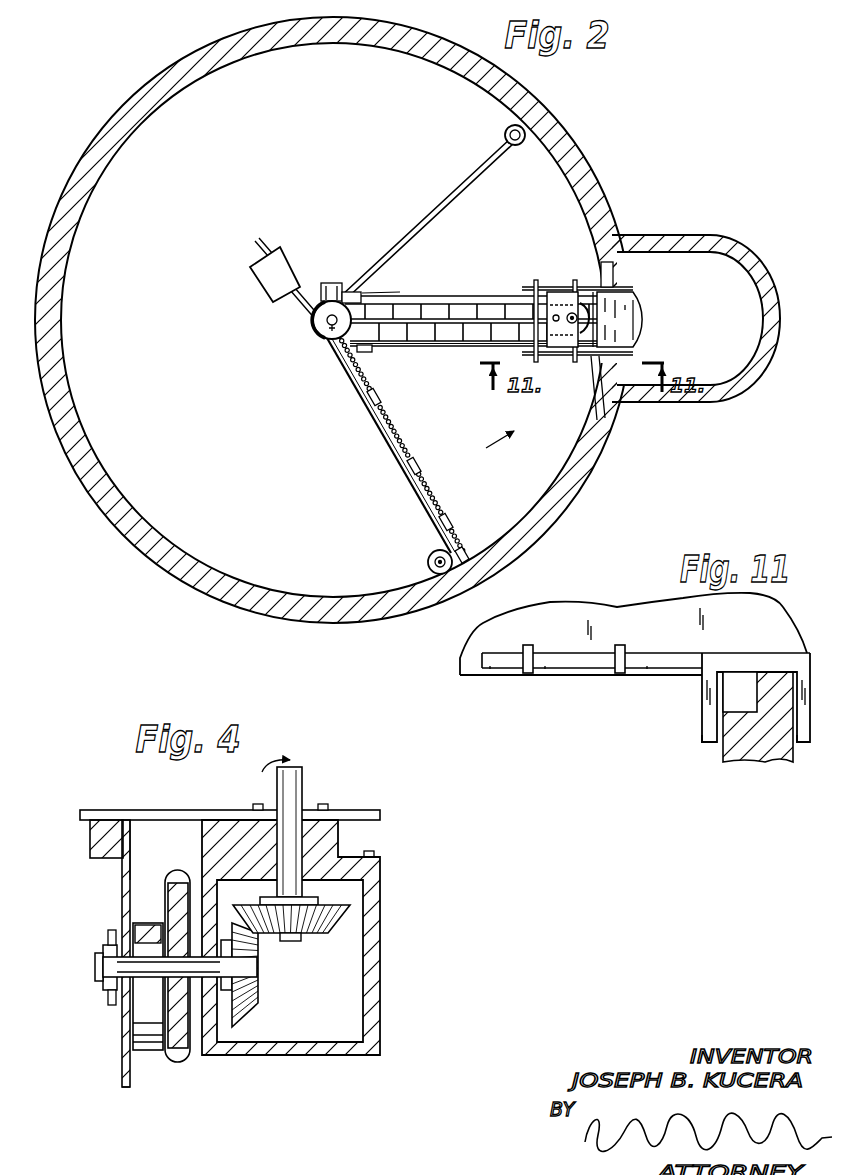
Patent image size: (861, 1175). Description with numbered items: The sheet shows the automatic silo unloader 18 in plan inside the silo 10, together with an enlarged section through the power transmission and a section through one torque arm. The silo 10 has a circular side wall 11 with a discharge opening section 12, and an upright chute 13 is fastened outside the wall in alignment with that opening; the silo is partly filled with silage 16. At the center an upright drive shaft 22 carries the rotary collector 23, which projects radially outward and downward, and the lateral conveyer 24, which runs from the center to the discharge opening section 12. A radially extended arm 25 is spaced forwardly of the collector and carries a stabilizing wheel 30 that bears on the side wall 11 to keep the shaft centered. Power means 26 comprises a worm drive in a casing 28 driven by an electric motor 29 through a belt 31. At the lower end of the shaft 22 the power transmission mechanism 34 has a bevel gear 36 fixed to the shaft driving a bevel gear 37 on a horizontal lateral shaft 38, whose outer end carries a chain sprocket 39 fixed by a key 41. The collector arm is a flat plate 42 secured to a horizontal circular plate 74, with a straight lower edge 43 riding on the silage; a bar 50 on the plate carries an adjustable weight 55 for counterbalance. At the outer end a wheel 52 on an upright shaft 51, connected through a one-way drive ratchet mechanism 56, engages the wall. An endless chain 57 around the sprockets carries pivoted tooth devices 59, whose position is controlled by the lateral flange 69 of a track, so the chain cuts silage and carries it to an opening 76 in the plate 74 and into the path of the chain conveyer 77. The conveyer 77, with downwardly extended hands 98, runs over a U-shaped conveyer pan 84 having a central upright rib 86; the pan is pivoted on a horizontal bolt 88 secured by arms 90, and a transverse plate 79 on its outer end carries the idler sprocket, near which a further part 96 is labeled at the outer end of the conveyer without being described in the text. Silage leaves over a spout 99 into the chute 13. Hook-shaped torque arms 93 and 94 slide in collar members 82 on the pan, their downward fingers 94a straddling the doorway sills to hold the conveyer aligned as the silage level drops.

In FIG. 2, the silo 10 is at (590, 97).
In FIG. 2, the side wall 11 is at (594, 189).
In FIG. 2, the discharge opening section 12 is at (622, 282).
In FIG. 2, the chute 13 is at (733, 243).
In FIG. 2, the silage 16 is at (190, 350).
In FIG. 2, the automatic silo unloader 18 is at (317, 340).
In FIG. 4, the drive shaft 22 is at (278, 786).
In FIG. 2, the rotary collector 23 is at (410, 440).
In FIG. 2, the lateral conveyer 24 is at (513, 286).
In FIG. 4, the lateral conveyer 24 is at (192, 1064).
In FIG. 2, the radially extended arm 25 is at (452, 196).
In FIG. 2, the power means 26 is at (321, 292).
In FIG. 2, the casing 28 is at (316, 324).
In FIG. 2, the electric motor 29 is at (336, 283).
In FIG. 2, the stabilizing wheel 30 is at (505, 135).
In FIG. 2, the belt 31 is at (356, 292).
In FIG. 4, the power transmission mechanism 34 is at (386, 978).
In FIG. 4, the bevel gear 36 is at (330, 932).
In FIG. 4, the bevel gear 37 is at (262, 998).
In FIG. 4, the lateral shaft 38 is at (95, 968).
In FIG. 4, the chain sprocket 39 is at (162, 872).
In FIG. 4, the key 41 is at (148, 925).
In FIG. 2, the flat plate 42 is at (401, 471).
In FIG. 4, the flat plate 42 is at (121, 1056).
In FIG. 4, the lower edge 43 is at (123, 1089).
In FIG. 2, the bar 50 is at (255, 242).
In FIG. 4, the bar 50 is at (95, 862).
In FIG. 2, the shaft 51 is at (428, 566).
In FIG. 2, the wheel 52 is at (434, 558).
In FIG. 2, the weight 55 is at (262, 287).
In FIG. 2, the one-way drive ratchet mechanism 56 is at (455, 550).
In FIG. 2, the endless chain 57 is at (422, 467).
In FIG. 2, the tooth devices 59 is at (448, 505).
In FIG. 4, the lateral flange 69 is at (148, 1052).
In FIG. 4, the horizontal circular plate 74 is at (213, 812).
In FIG. 4, the opening 76 is at (148, 812).
In FIG. 2, the chain conveyer 77 is at (466, 348).
In FIG. 2, the transverse plate 79 is at (548, 343).
In FIG. 2, the collar members 82 is at (537, 286).
In FIG. 11, the collar members 82 is at (532, 646).
In FIG. 2, the conveyer pan 84 is at (450, 295).
In FIG. 11, the conveyer pan 84 is at (594, 610).
In FIG. 2, the central longitudinal upright rib 86 is at (430, 296).
In FIG. 2, the horizontal bolt 88 is at (370, 353).
In FIG. 2, the arms 90 is at (388, 291).
In FIG. 2, the torque arm 93 is at (600, 270).
In FIG. 2, the torque arm 94 is at (594, 356).
In FIG. 11, the torque arm 94 is at (666, 660).
In FIG. 2, the fingers 94a is at (642, 340).
In FIG. 11, the fingers 94a is at (703, 742).
In FIG. 2, the carriage plate 96 is at (565, 348).
In FIG. 2, the hands 98 is at (472, 298).
In FIG. 2, the spout 99 is at (643, 312).